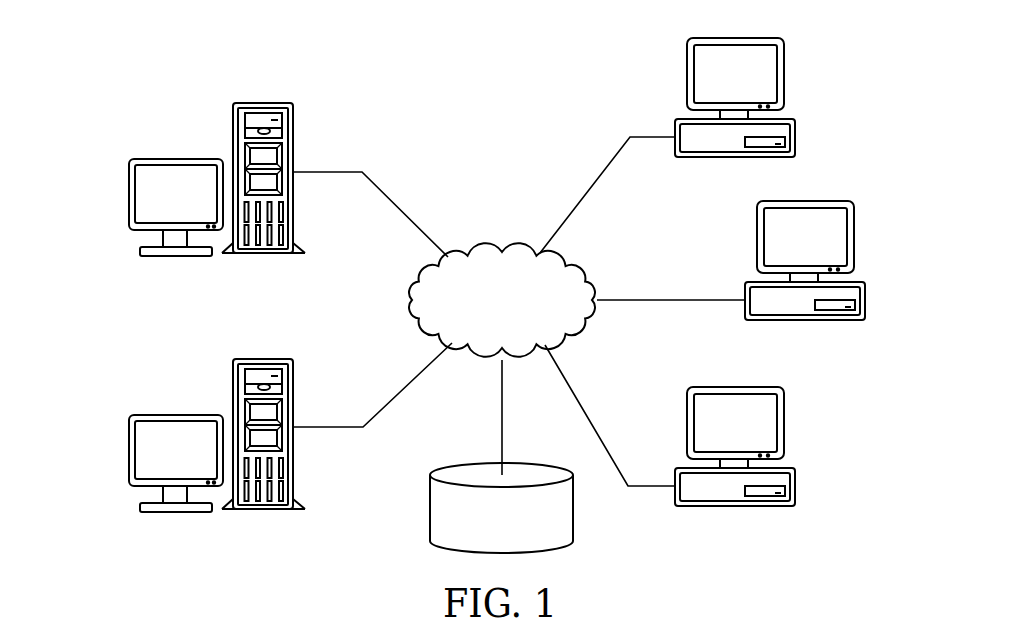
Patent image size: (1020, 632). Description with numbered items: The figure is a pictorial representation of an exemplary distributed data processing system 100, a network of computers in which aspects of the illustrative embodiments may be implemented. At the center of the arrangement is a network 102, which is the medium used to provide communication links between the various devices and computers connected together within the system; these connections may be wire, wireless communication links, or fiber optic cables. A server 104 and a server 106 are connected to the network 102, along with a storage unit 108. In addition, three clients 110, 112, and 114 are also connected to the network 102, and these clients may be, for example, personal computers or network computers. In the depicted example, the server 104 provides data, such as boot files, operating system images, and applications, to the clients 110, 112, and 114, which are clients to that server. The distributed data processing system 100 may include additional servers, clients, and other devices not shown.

The distributed data processing system 100 is at (367, 80).
The network 102 is at (478, 248).
The server 104 is at (129, 195).
The server 106 is at (129, 451).
The storage unit 108 is at (430, 511).
The client 110 is at (796, 129).
The client 112 is at (866, 312).
The client 114 is at (796, 497).